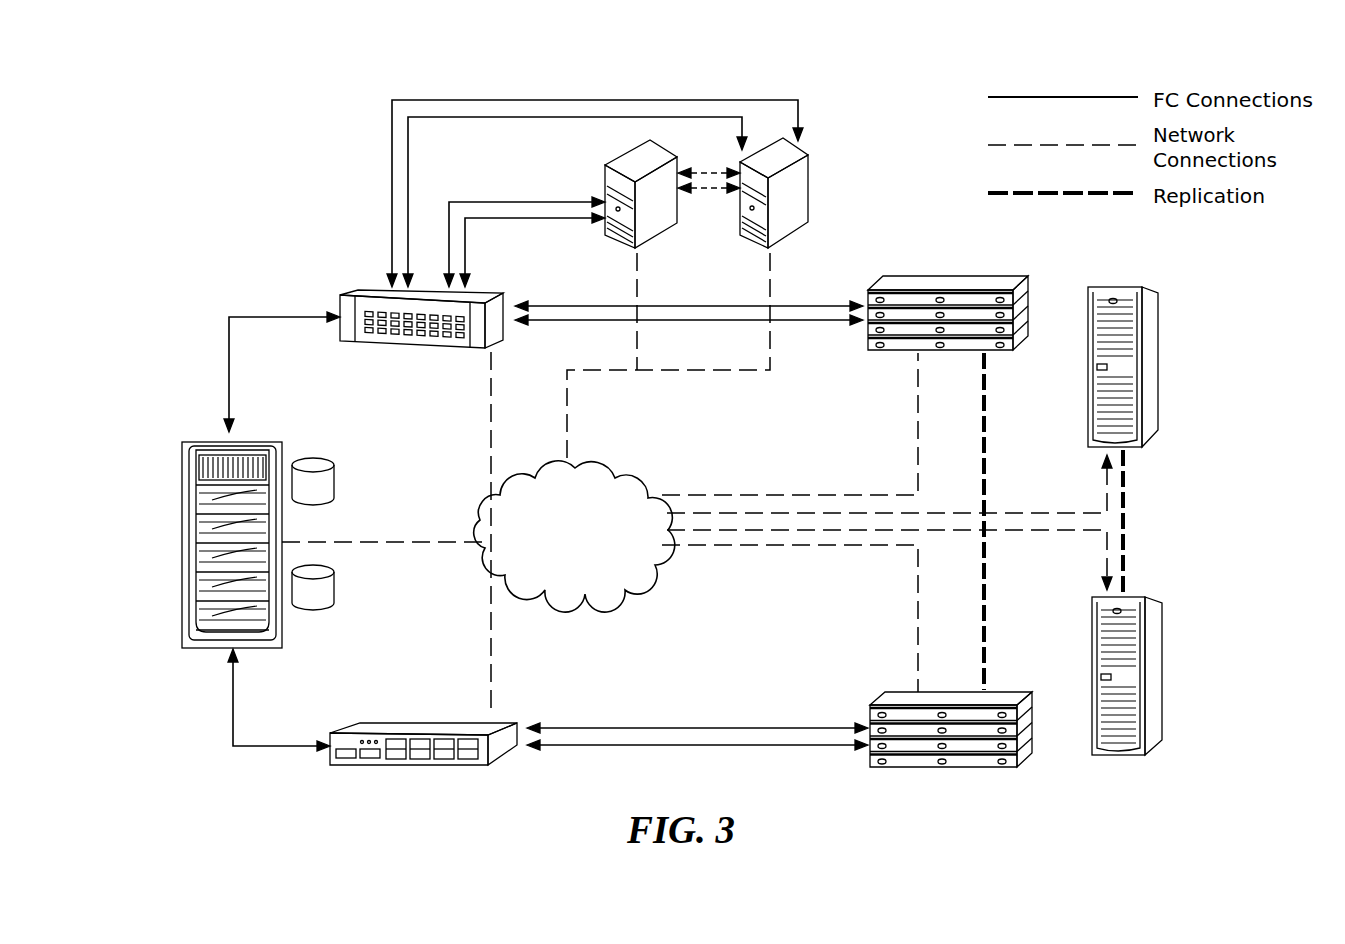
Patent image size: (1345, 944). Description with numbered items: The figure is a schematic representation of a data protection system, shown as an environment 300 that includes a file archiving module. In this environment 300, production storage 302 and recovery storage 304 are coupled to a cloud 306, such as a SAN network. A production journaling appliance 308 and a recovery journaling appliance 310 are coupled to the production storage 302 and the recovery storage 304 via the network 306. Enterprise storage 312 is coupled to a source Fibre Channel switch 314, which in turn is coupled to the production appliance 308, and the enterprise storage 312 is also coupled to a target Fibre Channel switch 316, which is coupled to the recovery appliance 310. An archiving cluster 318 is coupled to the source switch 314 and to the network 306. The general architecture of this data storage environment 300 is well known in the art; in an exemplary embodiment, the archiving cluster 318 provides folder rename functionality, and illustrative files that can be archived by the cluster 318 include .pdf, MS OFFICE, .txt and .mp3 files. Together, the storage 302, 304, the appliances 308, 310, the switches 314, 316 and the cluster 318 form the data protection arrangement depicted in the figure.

The environment 300 is at (276, 98).
The production storage 302 is at (1152, 372).
The recovery storage 304 is at (1155, 660).
The cloud 306 is at (559, 573).
The production journaling appliance 308 is at (885, 348).
The recovery journaling appliance 310 is at (897, 692).
The enterprise storage 312 is at (196, 441).
The source Fibre Channel switch 314 is at (338, 300).
The target Fibre Channel switch 316 is at (418, 722).
The archiving cluster 318 is at (750, 248).